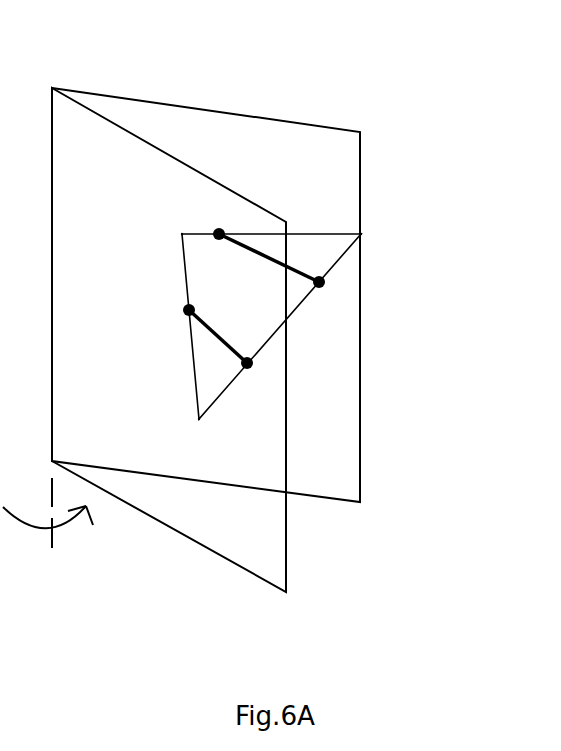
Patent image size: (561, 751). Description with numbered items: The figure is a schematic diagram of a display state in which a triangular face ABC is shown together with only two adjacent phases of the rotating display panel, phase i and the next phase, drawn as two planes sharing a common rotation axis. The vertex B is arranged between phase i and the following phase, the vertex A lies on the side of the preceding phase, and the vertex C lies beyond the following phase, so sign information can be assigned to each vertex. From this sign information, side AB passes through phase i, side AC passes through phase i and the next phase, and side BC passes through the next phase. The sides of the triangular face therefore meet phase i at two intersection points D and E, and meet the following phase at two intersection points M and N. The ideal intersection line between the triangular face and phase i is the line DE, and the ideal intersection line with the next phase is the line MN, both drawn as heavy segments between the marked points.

The vertex A is at (188, 424).
The vertex B is at (171, 237).
The vertex C is at (379, 234).
The intersection point D is at (172, 311).
The intersection point E is at (255, 386).
The intersection point M is at (210, 213).
The intersection point N is at (330, 303).
The phase i is at (169, 372).